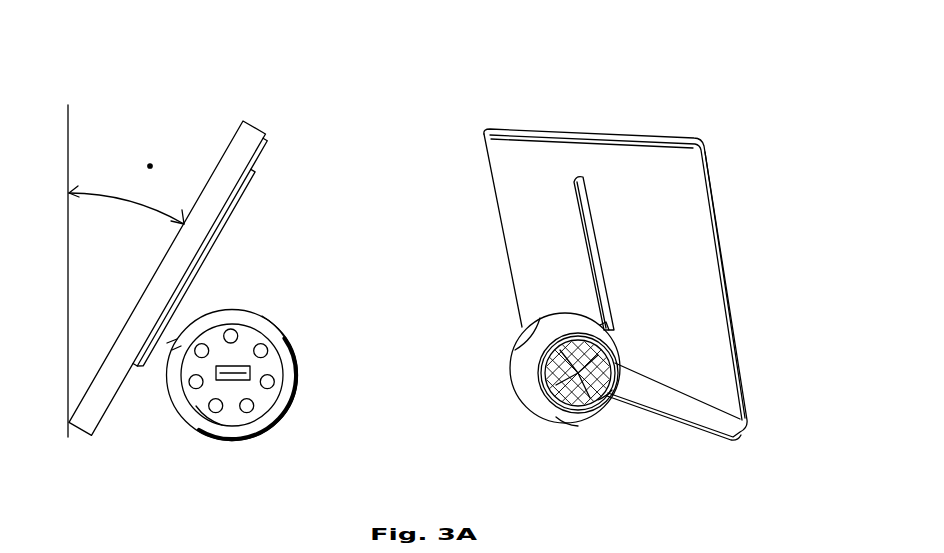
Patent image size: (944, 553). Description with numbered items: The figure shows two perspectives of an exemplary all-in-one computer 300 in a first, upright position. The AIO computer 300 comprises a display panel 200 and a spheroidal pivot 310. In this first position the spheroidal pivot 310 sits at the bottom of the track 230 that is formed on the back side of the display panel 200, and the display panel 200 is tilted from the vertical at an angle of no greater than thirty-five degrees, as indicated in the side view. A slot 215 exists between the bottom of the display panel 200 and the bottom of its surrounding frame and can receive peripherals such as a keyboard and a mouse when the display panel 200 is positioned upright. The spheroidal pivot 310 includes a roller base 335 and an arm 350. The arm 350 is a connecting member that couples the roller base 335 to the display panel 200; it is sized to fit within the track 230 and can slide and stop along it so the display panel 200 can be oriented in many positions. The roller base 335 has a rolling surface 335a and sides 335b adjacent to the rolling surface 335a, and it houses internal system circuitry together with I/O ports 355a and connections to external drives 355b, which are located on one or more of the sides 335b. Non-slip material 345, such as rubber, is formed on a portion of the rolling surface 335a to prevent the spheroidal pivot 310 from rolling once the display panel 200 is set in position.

The AIO computer 300 is at (157, 108).
The display panel 200 is at (263, 137).
The slot 215 is at (725, 408).
The track 230 is at (586, 233).
The spheroidal pivot 310 is at (172, 395).
The arm 350 is at (183, 318).
The roller base 335 is at (283, 350).
The rolling surface 335a is at (274, 319).
The sides 335b is at (202, 402).
The non-slip material 345 is at (298, 398).
The I/O ports 355a is at (250, 410).
The connections to external drives 355b is at (242, 383).